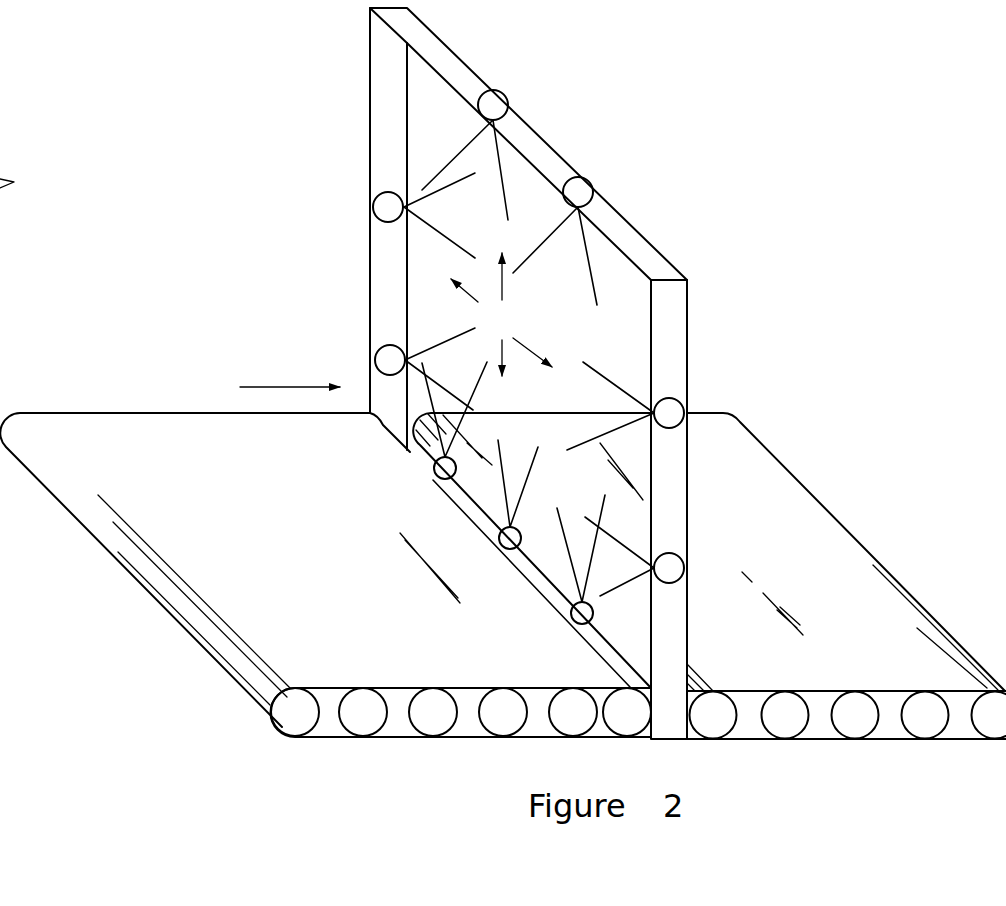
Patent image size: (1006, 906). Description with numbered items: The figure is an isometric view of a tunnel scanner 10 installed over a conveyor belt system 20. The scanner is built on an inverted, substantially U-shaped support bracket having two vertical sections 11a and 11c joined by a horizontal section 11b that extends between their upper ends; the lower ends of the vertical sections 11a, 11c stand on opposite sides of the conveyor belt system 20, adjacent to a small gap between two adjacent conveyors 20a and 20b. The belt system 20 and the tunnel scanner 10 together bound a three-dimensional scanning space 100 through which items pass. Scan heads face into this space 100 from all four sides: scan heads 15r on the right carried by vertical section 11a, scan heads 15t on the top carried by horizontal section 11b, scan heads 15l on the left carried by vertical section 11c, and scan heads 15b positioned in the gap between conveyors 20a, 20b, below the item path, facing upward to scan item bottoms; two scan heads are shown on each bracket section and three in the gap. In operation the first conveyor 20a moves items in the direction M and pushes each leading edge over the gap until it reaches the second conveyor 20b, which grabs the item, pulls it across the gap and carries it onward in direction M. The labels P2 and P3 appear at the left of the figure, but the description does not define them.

The tunnel scanner 10 is at (640, 92).
The vertical section of support bracket 11a is at (677, 340).
The horizontal section of support bracket 11b is at (650, 249).
The vertical section of support bracket 11c is at (377, 69).
The top scan heads 15t is at (493, 105).
The left scan heads 15l is at (375, 204).
The right scan heads 15r is at (672, 407).
The bottom scan heads 15b is at (434, 468).
The conveyor belt system 20 is at (210, 383).
The first conveyor 20a is at (60, 412).
The second conveyor 20b is at (782, 477).
The scanning space 100 is at (501, 314).
The direction of motion M is at (290, 374).
The position P2 is at (10, 124).
The position P3 is at (0, 222).